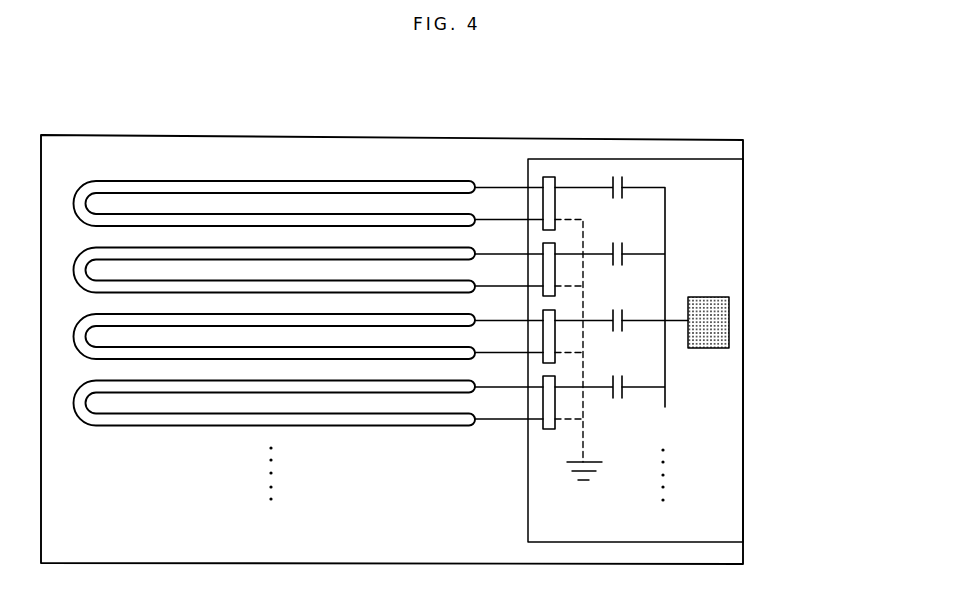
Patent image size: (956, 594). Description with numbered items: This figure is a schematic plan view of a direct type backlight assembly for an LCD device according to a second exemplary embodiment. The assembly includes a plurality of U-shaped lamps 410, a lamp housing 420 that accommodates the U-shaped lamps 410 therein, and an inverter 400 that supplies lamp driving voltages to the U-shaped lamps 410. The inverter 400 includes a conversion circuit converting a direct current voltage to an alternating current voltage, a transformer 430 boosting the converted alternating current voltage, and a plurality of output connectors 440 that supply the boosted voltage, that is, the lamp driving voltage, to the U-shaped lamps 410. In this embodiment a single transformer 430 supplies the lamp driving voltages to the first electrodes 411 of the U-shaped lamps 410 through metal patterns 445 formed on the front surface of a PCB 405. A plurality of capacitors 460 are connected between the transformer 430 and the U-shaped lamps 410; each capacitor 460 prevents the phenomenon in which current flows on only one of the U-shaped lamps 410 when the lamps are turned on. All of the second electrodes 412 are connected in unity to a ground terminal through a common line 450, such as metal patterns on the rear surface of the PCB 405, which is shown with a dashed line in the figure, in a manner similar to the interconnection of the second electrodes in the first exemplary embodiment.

The inverter 400 is at (456, 304).
The PCB 405 is at (723, 413).
The U-shaped lamps 410 is at (250, 182).
The first electrodes 411 is at (481, 187).
The second electrodes 412 is at (484, 219).
The lamp housing 420 is at (185, 136).
The transformer 430 is at (713, 305).
The output connectors 440 is at (549, 177).
The metal patterns 445 is at (645, 188).
The common line 450 is at (582, 441).
The capacitors 460 is at (625, 184).